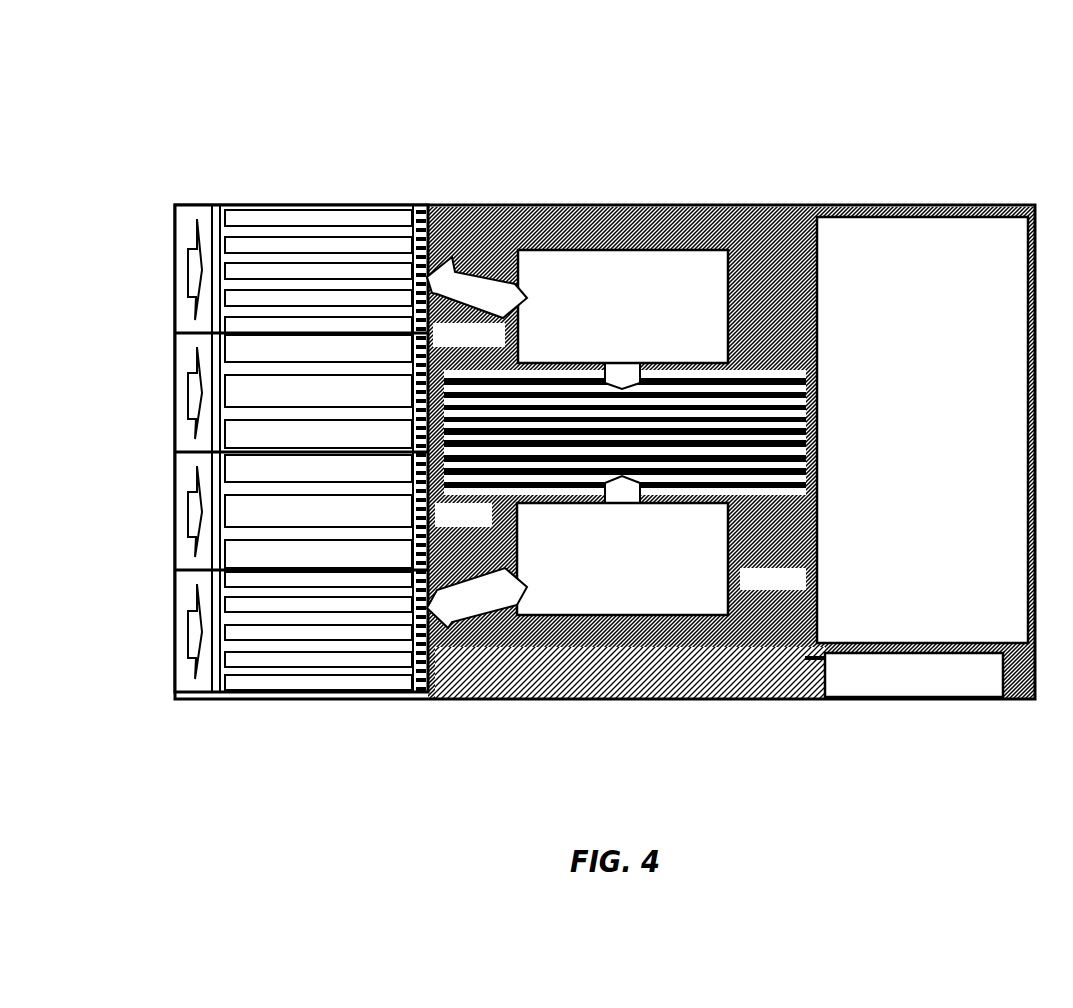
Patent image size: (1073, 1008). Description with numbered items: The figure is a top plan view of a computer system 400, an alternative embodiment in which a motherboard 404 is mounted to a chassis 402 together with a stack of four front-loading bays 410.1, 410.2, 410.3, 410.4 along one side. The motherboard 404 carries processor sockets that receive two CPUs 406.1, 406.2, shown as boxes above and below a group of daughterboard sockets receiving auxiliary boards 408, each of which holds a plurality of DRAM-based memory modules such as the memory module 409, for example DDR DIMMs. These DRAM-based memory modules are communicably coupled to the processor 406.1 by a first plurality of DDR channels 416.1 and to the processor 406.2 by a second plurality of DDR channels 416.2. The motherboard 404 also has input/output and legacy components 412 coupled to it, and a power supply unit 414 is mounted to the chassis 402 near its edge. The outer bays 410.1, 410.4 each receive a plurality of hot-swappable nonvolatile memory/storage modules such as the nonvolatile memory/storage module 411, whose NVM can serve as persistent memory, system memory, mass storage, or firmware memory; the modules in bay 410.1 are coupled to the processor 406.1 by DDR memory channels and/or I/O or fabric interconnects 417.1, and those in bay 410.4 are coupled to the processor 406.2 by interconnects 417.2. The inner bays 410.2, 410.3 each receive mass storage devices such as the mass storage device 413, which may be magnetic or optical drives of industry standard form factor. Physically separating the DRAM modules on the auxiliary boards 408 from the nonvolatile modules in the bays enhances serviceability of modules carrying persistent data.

The computer system 400 is at (220, 88).
The chassis 402 is at (792, 703).
The motherboard 404 is at (756, 588).
The CPU 406.1 is at (595, 328).
The CPU 406.2 is at (595, 581).
The auxiliary board 408 is at (469, 335).
The memory module 409 is at (463, 515).
The front-loading bay 410.1 is at (155, 268).
The front-loading bay 410.2 is at (155, 394).
The front-loading bay 410.3 is at (155, 511).
The front-loading bay 410.4 is at (155, 626).
The nonvolatile memory/storage module 411 is at (297, 203).
The input/output (I/O) and legacy components 412 is at (906, 468).
The mass storage device 413 is at (337, 358).
The power supply unit 414 is at (955, 685).
The DDR channels 416.1 is at (644, 354).
The DDR channels 416.2 is at (646, 511).
The DDR memory channels and/or I/O or fabric interconnects 417.1 is at (516, 291).
The DDR memory channels and/or I/O or fabric interconnects 417.2 is at (508, 598).